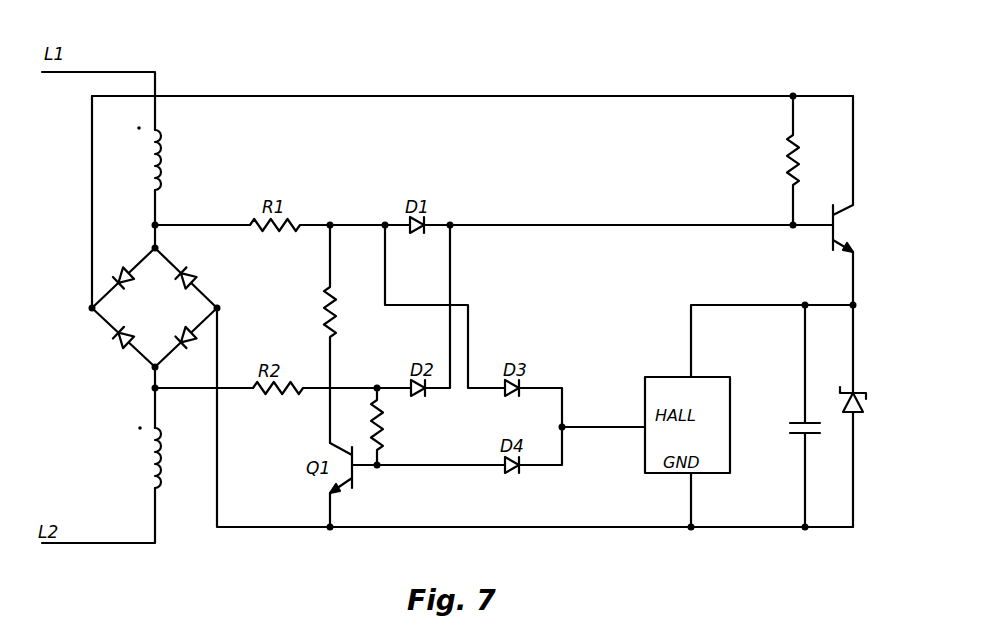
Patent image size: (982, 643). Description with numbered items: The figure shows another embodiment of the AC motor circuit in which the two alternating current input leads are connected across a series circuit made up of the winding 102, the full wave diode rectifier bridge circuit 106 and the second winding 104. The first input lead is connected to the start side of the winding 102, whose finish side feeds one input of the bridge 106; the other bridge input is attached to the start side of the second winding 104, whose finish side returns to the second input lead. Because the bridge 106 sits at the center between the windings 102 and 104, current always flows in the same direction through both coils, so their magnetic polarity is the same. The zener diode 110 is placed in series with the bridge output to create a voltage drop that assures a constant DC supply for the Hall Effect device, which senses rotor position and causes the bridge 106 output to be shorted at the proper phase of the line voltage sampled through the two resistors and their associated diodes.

The winding 102 is at (163, 157).
The second winding 104 is at (155, 460).
The full wave diode rectifier bridge circuit 106 is at (205, 284).
The zener diode 110 is at (897, 378).